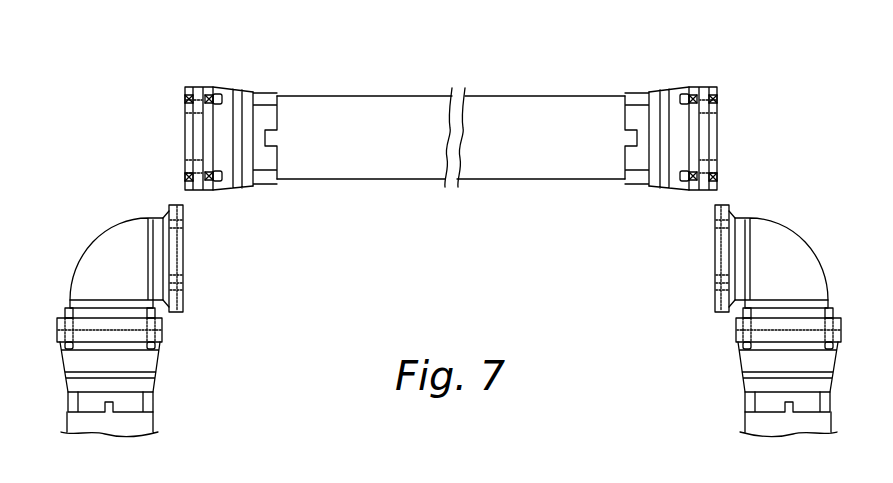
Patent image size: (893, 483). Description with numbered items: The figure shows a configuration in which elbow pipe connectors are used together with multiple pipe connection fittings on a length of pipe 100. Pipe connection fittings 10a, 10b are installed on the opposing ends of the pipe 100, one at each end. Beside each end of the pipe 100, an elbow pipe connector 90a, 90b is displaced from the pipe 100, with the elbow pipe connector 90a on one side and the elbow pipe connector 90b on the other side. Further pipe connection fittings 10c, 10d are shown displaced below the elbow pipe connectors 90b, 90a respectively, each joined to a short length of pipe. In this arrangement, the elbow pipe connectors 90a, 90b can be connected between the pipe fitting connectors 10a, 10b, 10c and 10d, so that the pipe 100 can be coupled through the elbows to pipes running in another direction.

The pipe 100 is at (500, 128).
The pipe connection fitting 10a is at (222, 92).
The pipe connection fitting 10b is at (668, 84).
The pipe connection fitting 10c is at (738, 362).
The pipe connection fitting 10d is at (59, 348).
The elbow pipe connector 90a is at (97, 258).
The elbow pipe connector 90b is at (785, 245).